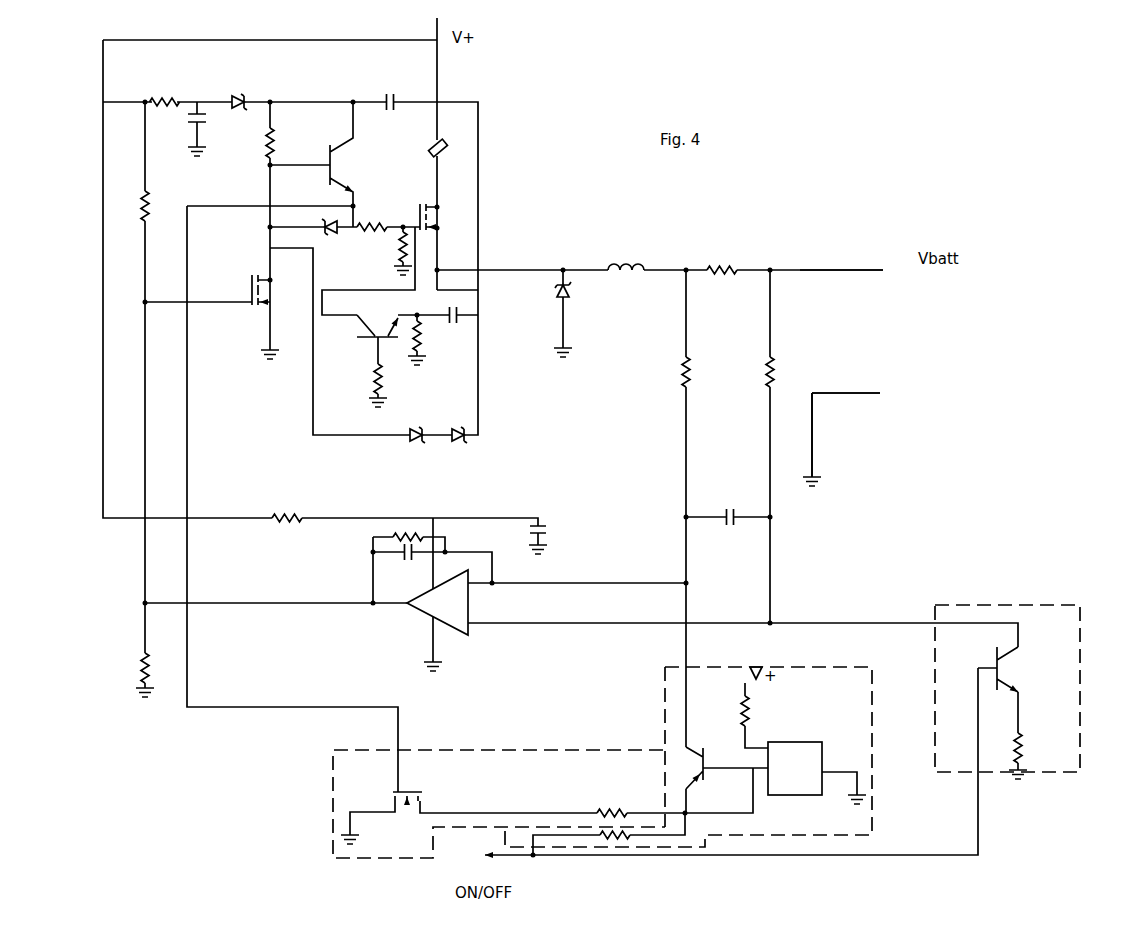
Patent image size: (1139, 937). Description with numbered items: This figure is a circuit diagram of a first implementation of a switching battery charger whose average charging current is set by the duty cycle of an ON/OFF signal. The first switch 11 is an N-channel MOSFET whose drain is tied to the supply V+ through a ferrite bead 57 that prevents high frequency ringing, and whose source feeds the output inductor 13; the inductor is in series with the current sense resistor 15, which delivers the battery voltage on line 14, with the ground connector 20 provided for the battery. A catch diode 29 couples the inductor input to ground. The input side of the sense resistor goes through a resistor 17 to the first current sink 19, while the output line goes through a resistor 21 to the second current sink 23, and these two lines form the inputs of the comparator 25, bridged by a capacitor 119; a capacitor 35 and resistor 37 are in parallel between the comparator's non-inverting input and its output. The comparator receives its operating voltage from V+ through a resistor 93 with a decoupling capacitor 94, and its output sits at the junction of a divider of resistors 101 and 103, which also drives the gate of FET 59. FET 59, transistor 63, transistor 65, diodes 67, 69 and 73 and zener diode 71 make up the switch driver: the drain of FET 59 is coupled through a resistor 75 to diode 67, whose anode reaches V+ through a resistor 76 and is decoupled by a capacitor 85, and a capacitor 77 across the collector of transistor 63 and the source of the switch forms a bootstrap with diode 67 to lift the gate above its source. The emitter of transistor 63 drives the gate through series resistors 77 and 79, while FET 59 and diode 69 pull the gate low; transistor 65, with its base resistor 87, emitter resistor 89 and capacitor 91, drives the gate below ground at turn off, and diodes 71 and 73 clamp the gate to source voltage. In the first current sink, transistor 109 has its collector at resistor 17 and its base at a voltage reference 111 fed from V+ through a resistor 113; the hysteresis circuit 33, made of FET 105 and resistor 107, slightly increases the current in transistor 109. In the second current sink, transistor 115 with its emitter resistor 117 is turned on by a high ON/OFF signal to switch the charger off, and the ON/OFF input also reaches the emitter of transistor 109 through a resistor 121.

The first switch 11 is at (437, 220).
The output inductor 13 is at (613, 265).
The line 14 is at (845, 268).
The current sense resistor 15 is at (718, 267).
The resistor 17 is at (685, 385).
The first current sink (offset current sink) 19 is at (778, 667).
The ground connector 20 is at (837, 393).
The resistor 21 is at (775, 373).
The second current sink 23 is at (1075, 718).
The comparator 25 is at (427, 612).
The catch diode 29 is at (553, 297).
The hysteresis circuit 33 is at (448, 742).
The capacitor 35 is at (415, 560).
The resistor 37 is at (420, 535).
The ferrite bead 57 is at (430, 150).
The FET 59 is at (272, 290).
The transistor 63 is at (353, 153).
The transistor 65 is at (376, 342).
The diode 67 is at (240, 96).
The diode 69 is at (327, 237).
The zener diode 71 is at (415, 440).
The diode 73 is at (456, 443).
The resistor 75 is at (270, 138).
The resistor 76 is at (162, 92).
The capacitor / resistor 77 is at (387, 98).
The resistor 79 is at (400, 237).
The capacitor 85 is at (190, 122).
The resistor 87 is at (372, 397).
The resistor 89 is at (423, 338).
The capacitor 91 is at (450, 325).
The resistor 93 is at (288, 525).
The capacitor 94 is at (547, 530).
The resistor 101 is at (140, 219).
The resistor 103 is at (138, 657).
The FET 105 is at (427, 803).
The resistor 107 is at (608, 813).
The transistor 109 is at (697, 783).
The voltage reference 111 is at (792, 747).
The resistor 113 is at (740, 727).
The transistor 115 is at (1000, 673).
The resistor 117 is at (1020, 757).
The capacitor 119 is at (730, 505).
The resistor 121 is at (613, 843).